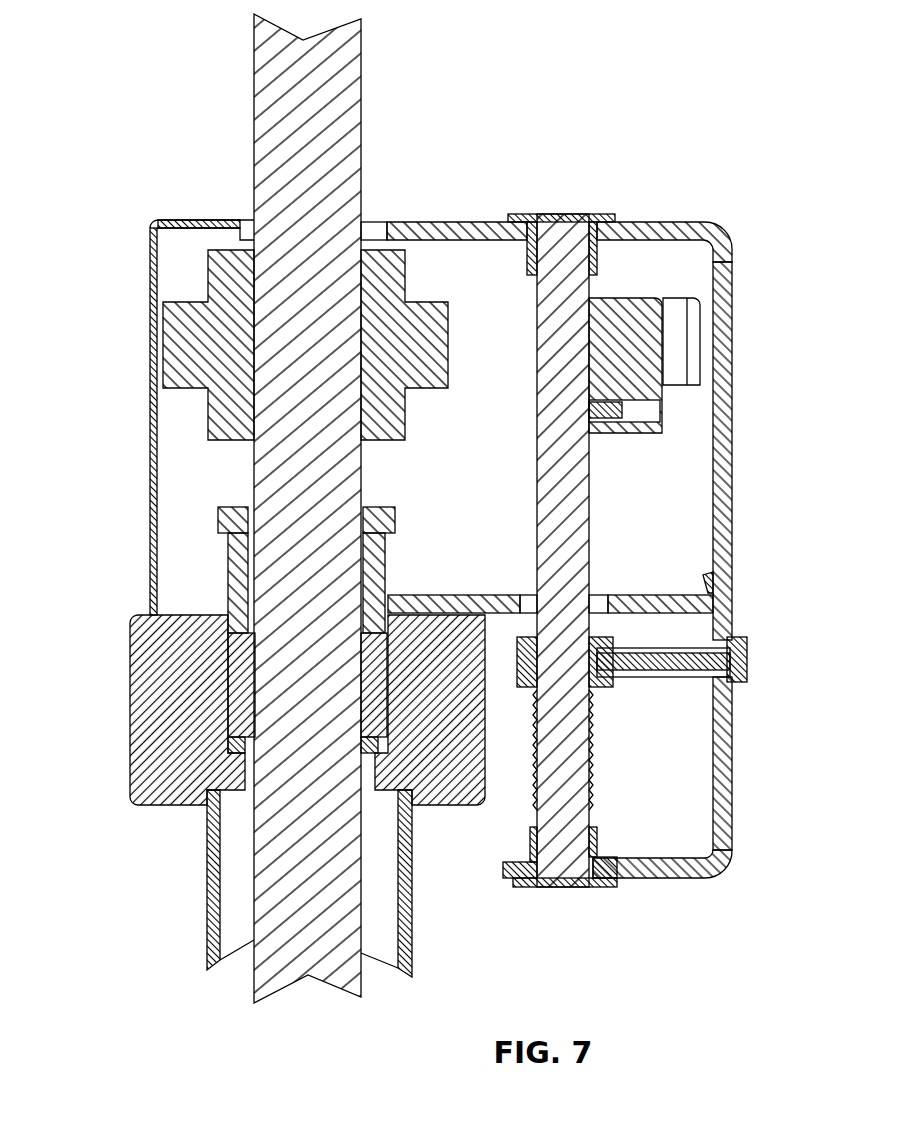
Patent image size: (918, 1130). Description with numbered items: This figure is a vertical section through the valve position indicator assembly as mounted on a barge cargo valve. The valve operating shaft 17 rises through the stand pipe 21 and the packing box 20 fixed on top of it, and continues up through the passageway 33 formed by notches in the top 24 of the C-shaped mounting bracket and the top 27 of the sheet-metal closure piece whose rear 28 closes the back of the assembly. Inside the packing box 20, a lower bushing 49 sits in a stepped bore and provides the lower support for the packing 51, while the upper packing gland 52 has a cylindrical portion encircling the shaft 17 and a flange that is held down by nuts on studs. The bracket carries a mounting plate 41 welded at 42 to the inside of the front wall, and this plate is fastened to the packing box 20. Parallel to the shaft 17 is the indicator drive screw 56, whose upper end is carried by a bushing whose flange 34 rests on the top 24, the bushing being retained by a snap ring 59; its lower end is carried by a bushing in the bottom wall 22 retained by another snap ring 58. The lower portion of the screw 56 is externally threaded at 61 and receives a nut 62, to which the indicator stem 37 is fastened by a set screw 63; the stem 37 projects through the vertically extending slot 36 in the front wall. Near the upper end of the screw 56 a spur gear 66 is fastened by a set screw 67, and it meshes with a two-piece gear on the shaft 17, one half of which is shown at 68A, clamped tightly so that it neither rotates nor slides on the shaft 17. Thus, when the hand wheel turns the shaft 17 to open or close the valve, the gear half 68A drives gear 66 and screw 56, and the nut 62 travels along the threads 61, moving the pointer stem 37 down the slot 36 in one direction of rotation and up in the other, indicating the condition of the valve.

The valve operating shaft 17 is at (273, 106).
The packing box 20 is at (173, 685).
The stand pipe 21 is at (212, 893).
The bottom wall 22 is at (673, 877).
The top 24 is at (442, 225).
The top 27 is at (207, 220).
The rear 28 is at (150, 262).
The passageway 33 is at (373, 220).
The radially extending flange 34 is at (602, 218).
The vertically extending slot 36 is at (727, 753).
The indicator stem 37 is at (750, 637).
The mounting plate 41 is at (625, 593).
The weld 42 is at (708, 572).
The lower bushing 49 is at (232, 745).
The packing 51 is at (247, 653).
The upper packing gland 52 is at (233, 557).
The indicator drive screw 56 is at (575, 500).
The snap ring 58 is at (530, 863).
The snap ring 59 is at (597, 240).
The external threads 61 is at (598, 770).
The nut 62 is at (613, 683).
The set screw 63 is at (747, 668).
The spur gear 66 is at (657, 348).
The set screw 67 is at (623, 410).
The gear half 68A is at (182, 342).